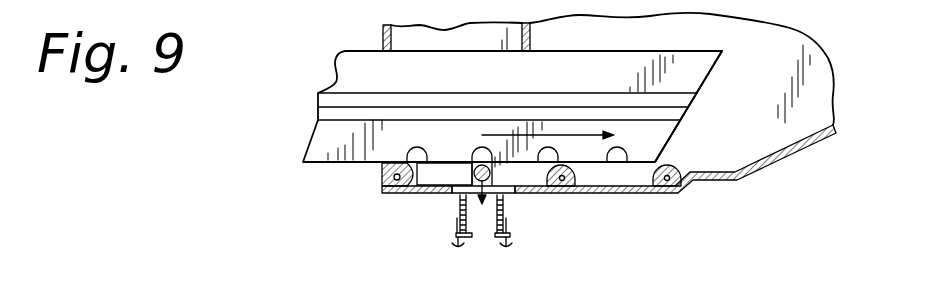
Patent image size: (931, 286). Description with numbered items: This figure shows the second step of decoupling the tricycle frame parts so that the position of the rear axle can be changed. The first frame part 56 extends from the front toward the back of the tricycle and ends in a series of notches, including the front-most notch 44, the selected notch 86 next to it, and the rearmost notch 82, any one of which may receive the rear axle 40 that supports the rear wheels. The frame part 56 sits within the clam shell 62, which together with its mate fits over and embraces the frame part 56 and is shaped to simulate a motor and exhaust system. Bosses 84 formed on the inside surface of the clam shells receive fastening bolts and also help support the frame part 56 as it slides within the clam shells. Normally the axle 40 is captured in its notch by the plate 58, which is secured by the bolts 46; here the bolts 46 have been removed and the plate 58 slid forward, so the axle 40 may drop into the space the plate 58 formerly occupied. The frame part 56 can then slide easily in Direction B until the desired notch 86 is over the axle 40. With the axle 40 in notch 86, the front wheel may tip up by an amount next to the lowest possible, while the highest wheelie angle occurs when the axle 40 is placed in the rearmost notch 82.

The first frame part 56 is at (351, 50).
The front-most notch 44 is at (413, 148).
The selected notch 86 is at (480, 150).
The rear axle 40 is at (485, 157).
The Direction B is at (571, 133).
The rearmost notch 82 is at (627, 150).
The plate 58 is at (452, 175).
The clam shell 62 is at (763, 170).
The bosses 84 is at (577, 177).
The bolts 46 is at (513, 252).